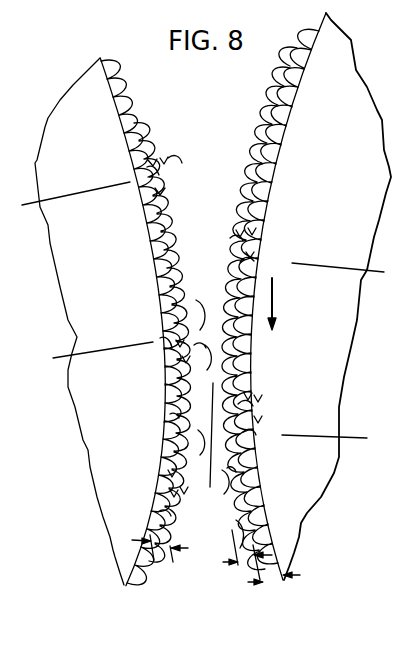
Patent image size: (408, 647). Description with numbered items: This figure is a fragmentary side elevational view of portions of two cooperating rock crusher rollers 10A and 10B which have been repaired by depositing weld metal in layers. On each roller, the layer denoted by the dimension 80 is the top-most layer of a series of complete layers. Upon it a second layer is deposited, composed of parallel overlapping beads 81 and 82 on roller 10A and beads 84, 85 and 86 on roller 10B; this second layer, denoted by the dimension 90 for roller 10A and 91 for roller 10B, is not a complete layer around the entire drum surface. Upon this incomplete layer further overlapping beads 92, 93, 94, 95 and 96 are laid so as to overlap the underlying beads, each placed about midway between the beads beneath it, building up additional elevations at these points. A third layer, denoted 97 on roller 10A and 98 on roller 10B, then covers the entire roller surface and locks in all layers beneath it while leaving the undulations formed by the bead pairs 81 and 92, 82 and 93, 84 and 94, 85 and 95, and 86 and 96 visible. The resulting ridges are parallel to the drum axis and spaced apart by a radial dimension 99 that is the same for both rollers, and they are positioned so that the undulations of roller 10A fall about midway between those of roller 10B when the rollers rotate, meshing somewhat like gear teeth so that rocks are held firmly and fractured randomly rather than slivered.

The roller 10A is at (327, 312).
The roller 10B is at (130, 309).
The top-most layer 80 is at (273, 578).
The bead 81 is at (244, 432).
The bead 82 is at (243, 262).
The bead 84 is at (147, 167).
The bead 85 is at (183, 350).
The bead 86 is at (160, 512).
The second layer 90 is at (250, 558).
The second layer 91 is at (163, 548).
The overlapping bead 92 is at (240, 404).
The overlapping bead 93 is at (232, 237).
The overlapping bead 94 is at (170, 158).
The overlapping bead 95 is at (196, 345).
The overlapping bead 96 is at (230, 386).
The third layer 97 is at (224, 472).
The third layer 98 is at (175, 417).
The radial dimension 99 is at (34, 206).